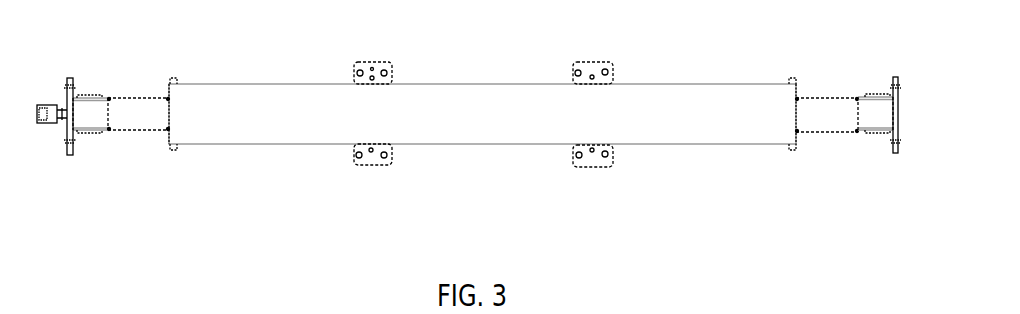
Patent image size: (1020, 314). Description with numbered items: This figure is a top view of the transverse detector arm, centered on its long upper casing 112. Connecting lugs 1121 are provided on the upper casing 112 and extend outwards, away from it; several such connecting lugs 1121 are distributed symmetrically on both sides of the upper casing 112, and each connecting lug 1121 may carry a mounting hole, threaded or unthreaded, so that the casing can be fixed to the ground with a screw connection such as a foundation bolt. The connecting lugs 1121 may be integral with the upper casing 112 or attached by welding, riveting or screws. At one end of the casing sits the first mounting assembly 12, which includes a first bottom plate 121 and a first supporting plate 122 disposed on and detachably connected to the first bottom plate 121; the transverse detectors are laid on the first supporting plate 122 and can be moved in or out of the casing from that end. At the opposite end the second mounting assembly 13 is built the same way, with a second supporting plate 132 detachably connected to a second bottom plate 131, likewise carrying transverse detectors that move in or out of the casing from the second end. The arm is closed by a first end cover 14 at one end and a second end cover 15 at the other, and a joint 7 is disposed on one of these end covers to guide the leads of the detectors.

The joint 7 is at (47, 124).
The first mounting assembly 12 is at (122, 161).
The first bottom plate 121 is at (97, 132).
The first supporting plate 122 is at (143, 127).
The second mounting assembly 13 is at (847, 161).
The second bottom plate 131 is at (872, 134).
The second supporting plate 132 is at (820, 122).
The first end cover 14 is at (70, 76).
The second end cover 15 is at (895, 75).
The upper casing 112 is at (238, 97).
The connecting lug 1121 is at (377, 62).